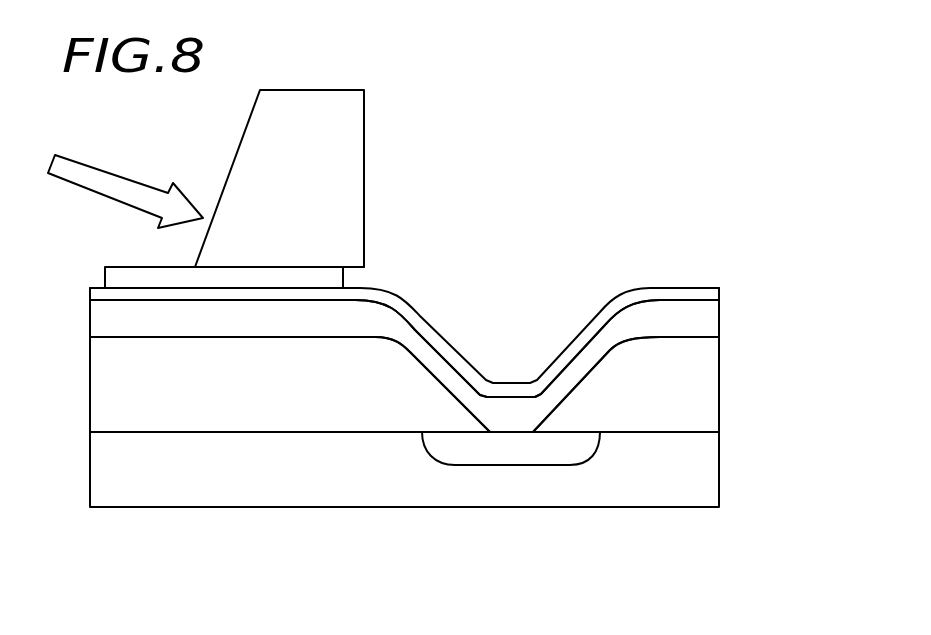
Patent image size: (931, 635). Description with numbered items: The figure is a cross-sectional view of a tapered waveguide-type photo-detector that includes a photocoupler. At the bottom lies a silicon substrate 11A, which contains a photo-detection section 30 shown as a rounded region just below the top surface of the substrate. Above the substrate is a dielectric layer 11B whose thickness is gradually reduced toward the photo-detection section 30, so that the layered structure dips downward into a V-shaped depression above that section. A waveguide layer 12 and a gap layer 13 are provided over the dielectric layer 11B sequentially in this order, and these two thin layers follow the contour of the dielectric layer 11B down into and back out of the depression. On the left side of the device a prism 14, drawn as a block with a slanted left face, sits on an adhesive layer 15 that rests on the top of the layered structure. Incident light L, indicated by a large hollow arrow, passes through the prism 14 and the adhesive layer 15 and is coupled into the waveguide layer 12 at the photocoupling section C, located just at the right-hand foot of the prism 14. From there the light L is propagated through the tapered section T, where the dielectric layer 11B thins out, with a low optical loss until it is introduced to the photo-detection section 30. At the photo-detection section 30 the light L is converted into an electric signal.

The silicon substrate 11A is at (703, 472).
The dielectric layer 11B is at (708, 380).
The waveguide layer 12 is at (712, 320).
The gap layer 13 is at (712, 290).
The prism 14 is at (350, 90).
The adhesive layer 15 is at (105, 278).
The photo-detection section 30 is at (531, 452).
The photocoupling section C is at (360, 278).
The tapered section T is at (470, 341).
The incident light L is at (111, 188).